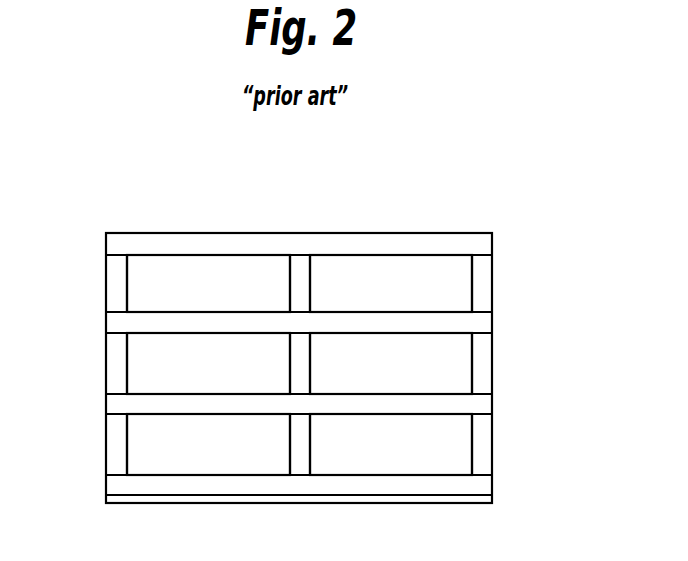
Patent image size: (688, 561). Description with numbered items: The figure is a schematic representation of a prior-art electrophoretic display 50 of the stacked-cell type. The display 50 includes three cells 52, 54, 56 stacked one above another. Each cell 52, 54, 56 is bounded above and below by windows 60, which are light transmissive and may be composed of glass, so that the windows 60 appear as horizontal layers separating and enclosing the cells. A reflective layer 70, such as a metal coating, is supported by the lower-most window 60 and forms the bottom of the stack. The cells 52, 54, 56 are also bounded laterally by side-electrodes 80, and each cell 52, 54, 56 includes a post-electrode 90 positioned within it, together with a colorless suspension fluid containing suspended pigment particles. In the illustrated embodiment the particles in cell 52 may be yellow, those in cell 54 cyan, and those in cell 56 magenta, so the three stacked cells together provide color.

The electrophoretic display 50 is at (356, 335).
The cell 52 is at (219, 297).
The cell 54 is at (219, 374).
The cell 56 is at (219, 455).
The window 60 is at (257, 346).
The reflective layer 70 is at (287, 523).
The side-electrode 80 is at (353, 365).
The post-electrode 90 is at (331, 365).